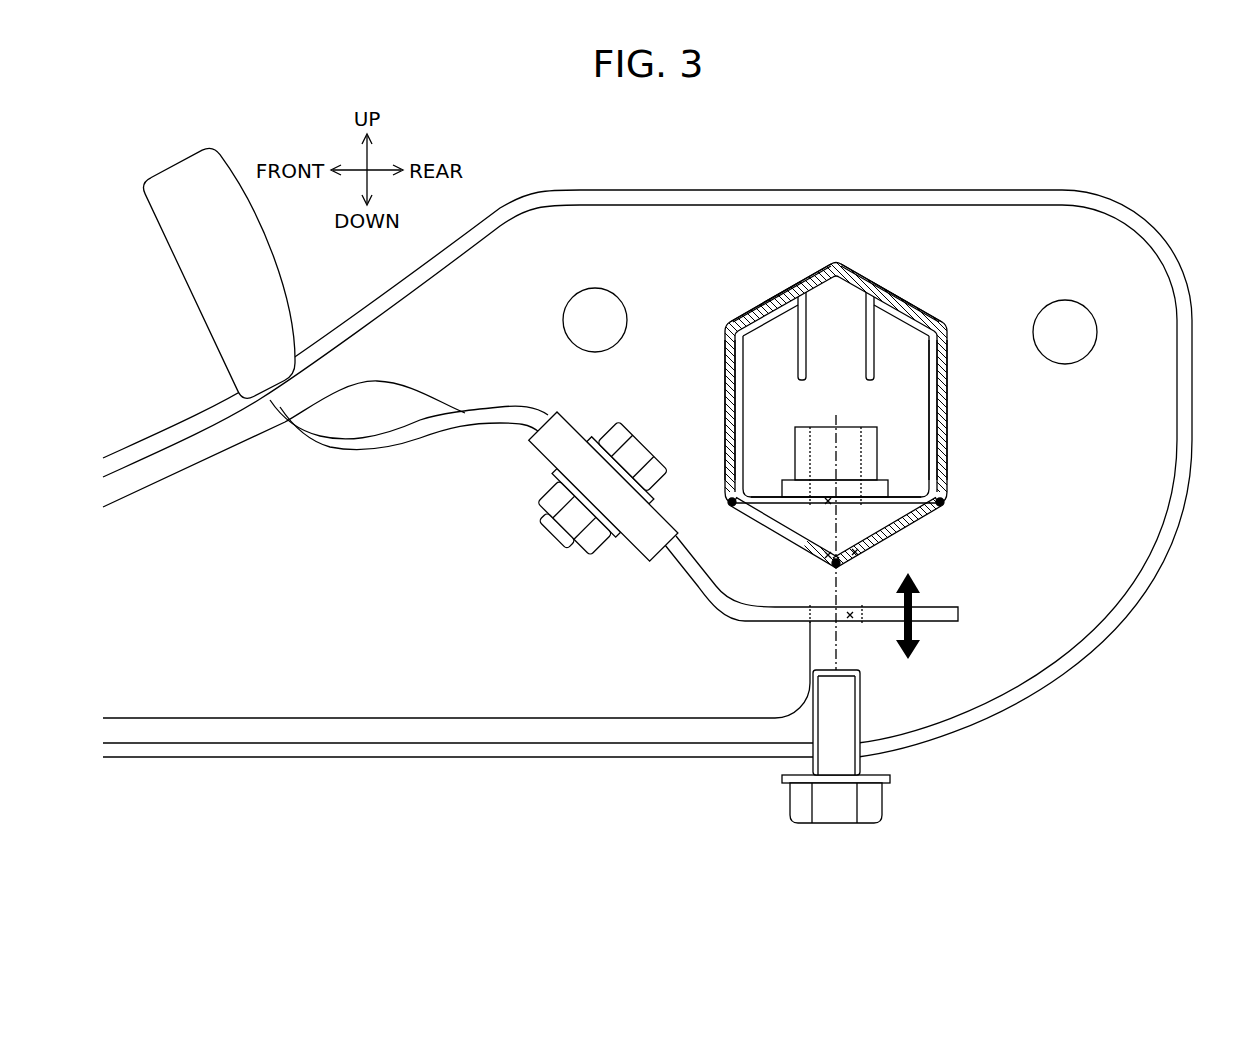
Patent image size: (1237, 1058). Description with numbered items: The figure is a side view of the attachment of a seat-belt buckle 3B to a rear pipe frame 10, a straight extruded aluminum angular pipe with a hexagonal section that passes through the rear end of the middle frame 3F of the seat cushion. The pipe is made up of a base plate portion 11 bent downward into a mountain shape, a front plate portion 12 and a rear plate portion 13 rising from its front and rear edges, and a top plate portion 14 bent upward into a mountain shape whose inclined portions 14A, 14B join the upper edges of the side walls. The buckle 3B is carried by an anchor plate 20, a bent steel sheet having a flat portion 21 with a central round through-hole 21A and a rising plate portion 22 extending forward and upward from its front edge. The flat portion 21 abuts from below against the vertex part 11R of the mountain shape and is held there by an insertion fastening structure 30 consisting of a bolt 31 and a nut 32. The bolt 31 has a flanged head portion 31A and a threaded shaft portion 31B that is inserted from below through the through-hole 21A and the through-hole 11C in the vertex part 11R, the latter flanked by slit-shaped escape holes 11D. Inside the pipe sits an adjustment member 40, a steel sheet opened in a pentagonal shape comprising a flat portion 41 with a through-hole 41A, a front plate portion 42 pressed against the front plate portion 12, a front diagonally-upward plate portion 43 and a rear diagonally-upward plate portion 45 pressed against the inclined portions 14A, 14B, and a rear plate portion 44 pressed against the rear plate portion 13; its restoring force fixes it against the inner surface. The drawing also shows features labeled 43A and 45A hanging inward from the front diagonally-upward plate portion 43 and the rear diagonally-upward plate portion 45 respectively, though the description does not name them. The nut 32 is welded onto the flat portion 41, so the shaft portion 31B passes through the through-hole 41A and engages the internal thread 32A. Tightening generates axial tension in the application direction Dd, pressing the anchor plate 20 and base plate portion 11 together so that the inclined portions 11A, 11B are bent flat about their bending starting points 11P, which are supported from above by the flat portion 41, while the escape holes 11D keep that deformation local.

The buckle 3B is at (197, 297).
The middle frame 3F is at (979, 196).
The rear pipe frame 10 is at (936, 306).
The base plate portion 11 is at (890, 539).
The inclined portion 11A is at (780, 528).
The inclined portion 11B is at (887, 533).
The through-hole 11C is at (855, 556).
The escape hole 11D is at (815, 557).
The bending starting point 11P is at (729, 502).
The vertex part 11R is at (834, 566).
The front plate portion 12 is at (728, 383).
The rear plate portion 13 is at (945, 422).
The top plate portion 14 is at (888, 148).
The inclined portion 14A is at (781, 291).
The inclined portion 14B is at (888, 291).
The anchor plate 20 is at (672, 590).
The flat portion 21 is at (962, 612).
The through-hole 21A is at (851, 623).
The rising plate portion 22 is at (637, 546).
The insertion fastening structure 30 is at (889, 767).
The bolt 31 is at (835, 753).
The flanged head portion 31A is at (842, 807).
The shaft portion 31B is at (840, 712).
The nut 32 is at (872, 427).
The internal thread 32A is at (797, 450).
The adjustment member 40 is at (935, 370).
The flat portion 41 is at (900, 500).
The through-hole 41A is at (838, 529).
The front plate portion 42 is at (735, 418).
The front diagonally-upward plate portion 43 is at (763, 313).
The left rib 43A is at (798, 342).
The rear plate portion 44 is at (935, 392).
The rear diagonally-upward plate portion 45 is at (907, 313).
The right rib 45A is at (874, 342).
The application direction Dd is at (918, 627).